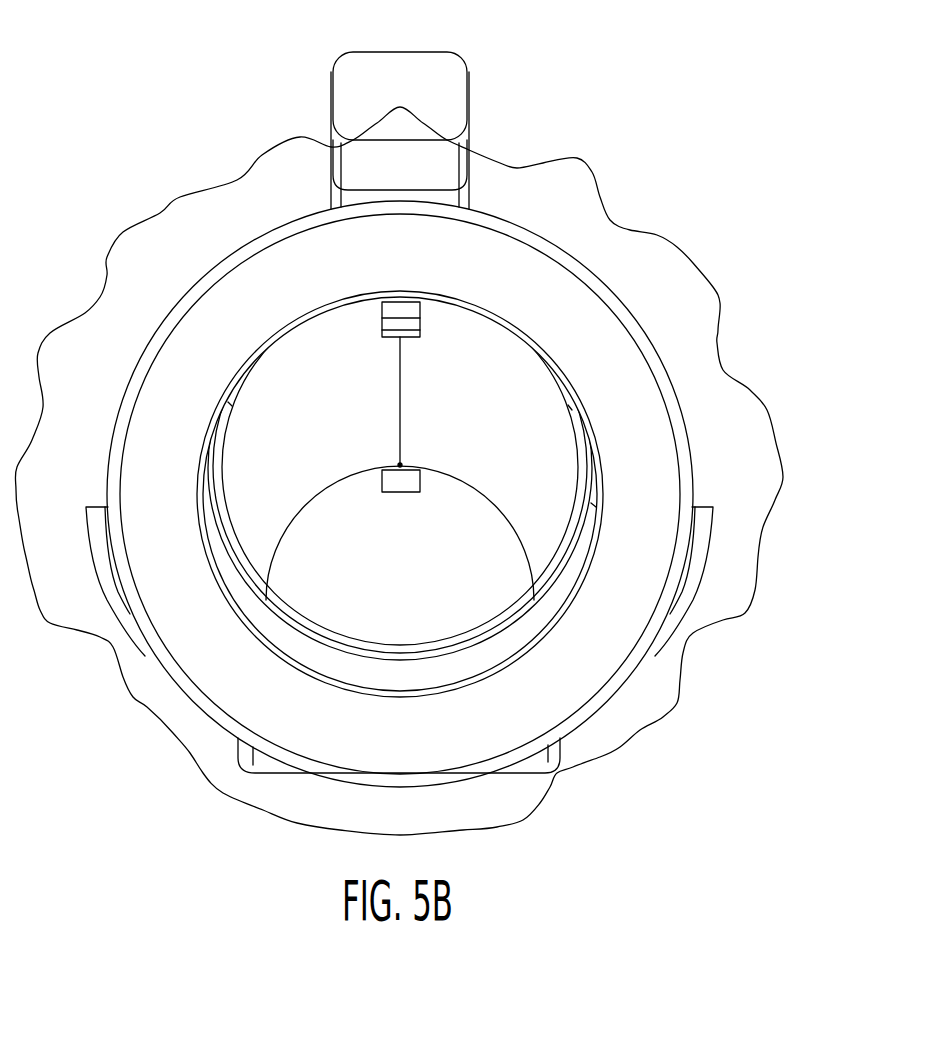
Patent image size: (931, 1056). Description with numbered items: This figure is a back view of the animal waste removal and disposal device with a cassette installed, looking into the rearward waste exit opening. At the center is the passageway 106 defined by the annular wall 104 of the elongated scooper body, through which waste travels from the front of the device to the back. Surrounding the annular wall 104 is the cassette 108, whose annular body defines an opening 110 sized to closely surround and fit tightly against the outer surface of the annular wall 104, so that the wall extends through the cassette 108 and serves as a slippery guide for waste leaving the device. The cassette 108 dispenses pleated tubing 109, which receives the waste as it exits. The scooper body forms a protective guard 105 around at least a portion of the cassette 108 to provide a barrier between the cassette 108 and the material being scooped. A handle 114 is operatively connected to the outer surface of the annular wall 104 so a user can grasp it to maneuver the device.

The annular wall 104 is at (583, 438).
The protective guard 105 is at (697, 560).
The passageway 106 is at (418, 577).
The cassette 108 is at (617, 318).
The pleated tubing 109 is at (655, 231).
The opening 110 is at (318, 597).
The handle 114 is at (458, 80).